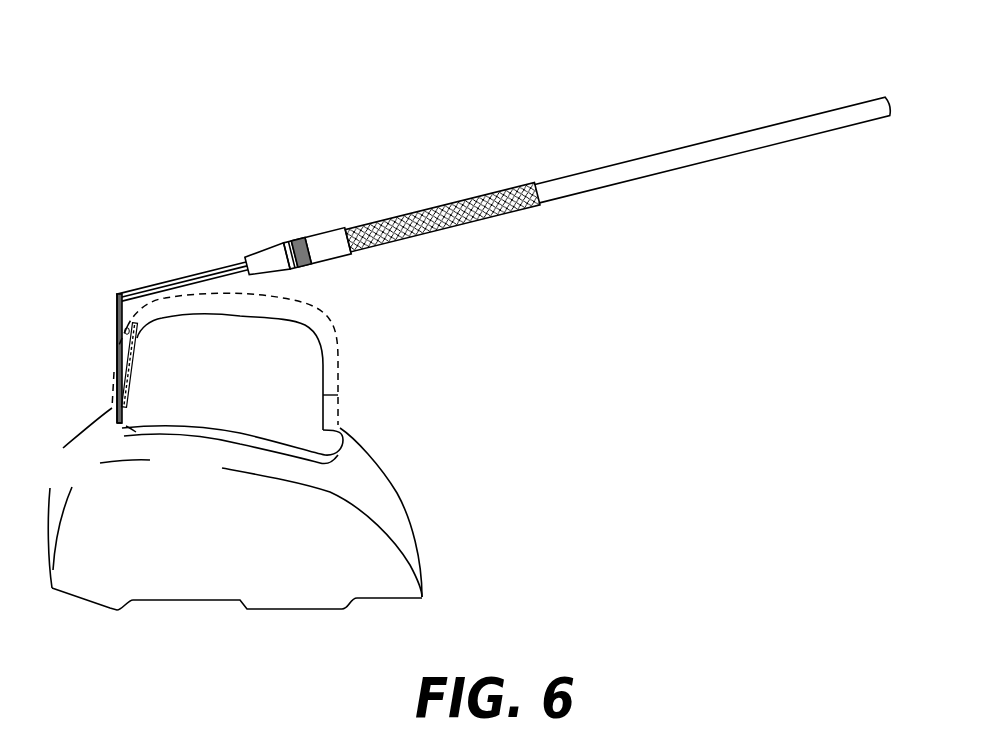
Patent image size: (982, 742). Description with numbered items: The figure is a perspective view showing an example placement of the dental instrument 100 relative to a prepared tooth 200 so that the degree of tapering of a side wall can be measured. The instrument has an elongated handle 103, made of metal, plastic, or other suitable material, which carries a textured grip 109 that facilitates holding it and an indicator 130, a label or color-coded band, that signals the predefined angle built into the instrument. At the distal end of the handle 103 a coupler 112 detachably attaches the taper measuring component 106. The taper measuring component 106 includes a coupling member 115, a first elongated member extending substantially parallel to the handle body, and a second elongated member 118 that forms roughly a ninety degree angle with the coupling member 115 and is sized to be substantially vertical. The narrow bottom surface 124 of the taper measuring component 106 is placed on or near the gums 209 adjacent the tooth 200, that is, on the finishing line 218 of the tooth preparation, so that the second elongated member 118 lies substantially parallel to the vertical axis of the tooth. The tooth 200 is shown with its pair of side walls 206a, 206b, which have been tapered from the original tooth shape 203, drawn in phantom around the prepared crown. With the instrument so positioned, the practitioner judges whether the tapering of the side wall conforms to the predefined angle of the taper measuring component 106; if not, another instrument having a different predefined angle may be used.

The dental instrument 100 is at (489, 251).
The handle 103 is at (615, 185).
The taper measuring component 106 is at (115, 280).
The textured grip 109 is at (548, 207).
The coupler 112 is at (258, 253).
The coupling member 115 is at (163, 280).
The second elongated member 118 is at (117, 332).
The bottom surface 124 is at (105, 440).
The indicator 130 is at (295, 238).
The tooth 200 is at (315, 348).
The original tooth shape 203 is at (340, 371).
The side wall 206a is at (150, 350).
The side wall 206b is at (325, 398).
The gums 209 is at (398, 491).
The finishing line 218 is at (145, 447).